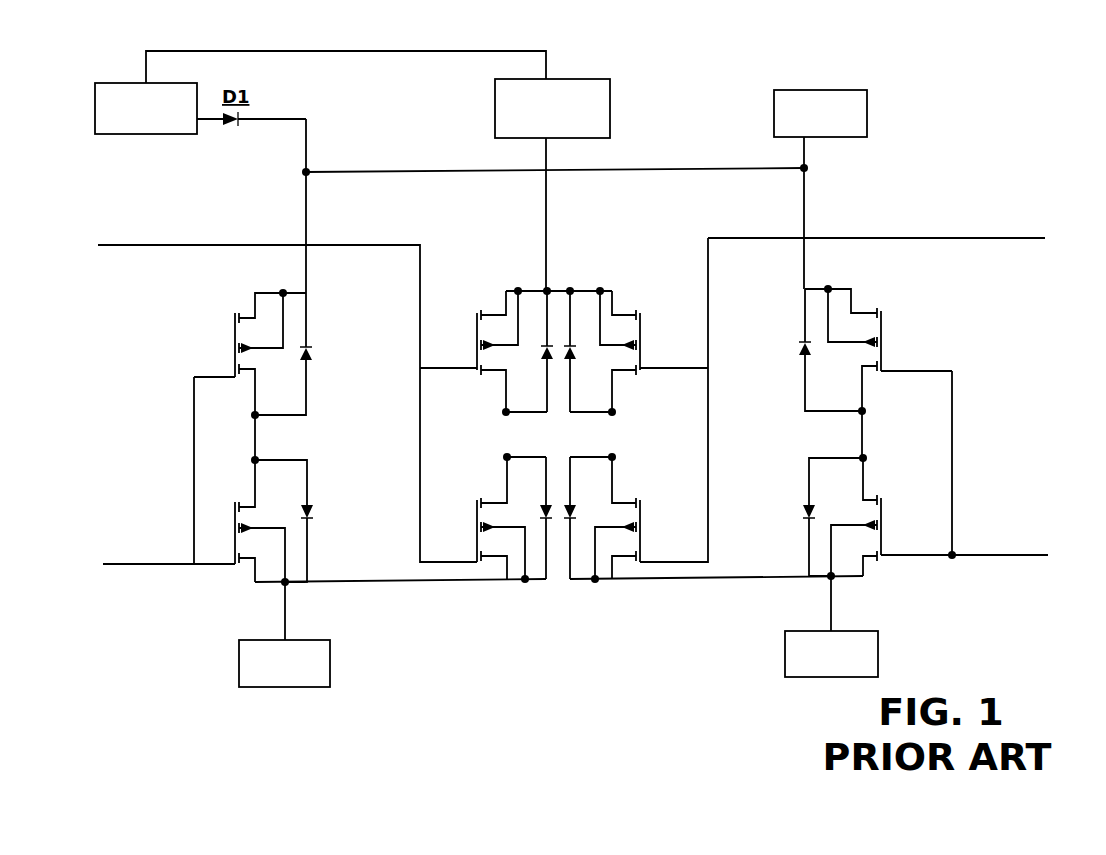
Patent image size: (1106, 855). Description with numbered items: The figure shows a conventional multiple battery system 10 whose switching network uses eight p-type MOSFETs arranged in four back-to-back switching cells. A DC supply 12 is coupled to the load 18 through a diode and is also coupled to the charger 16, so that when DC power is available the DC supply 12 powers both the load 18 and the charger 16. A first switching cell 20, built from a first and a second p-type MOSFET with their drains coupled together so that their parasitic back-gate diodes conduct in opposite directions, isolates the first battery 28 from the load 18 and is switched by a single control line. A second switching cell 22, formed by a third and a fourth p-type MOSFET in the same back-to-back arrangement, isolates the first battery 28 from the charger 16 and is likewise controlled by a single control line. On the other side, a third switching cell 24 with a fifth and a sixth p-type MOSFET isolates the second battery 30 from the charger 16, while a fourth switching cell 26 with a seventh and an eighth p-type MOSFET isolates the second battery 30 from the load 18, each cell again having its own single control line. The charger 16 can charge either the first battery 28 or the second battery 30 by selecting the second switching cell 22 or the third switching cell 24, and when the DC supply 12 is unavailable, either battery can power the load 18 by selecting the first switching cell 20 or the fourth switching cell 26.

The multiple battery system 10 is at (923, 53).
The DC supply 12 is at (113, 83).
The charger 16 is at (571, 79).
The load 18 is at (817, 90).
The first switching cell 20 is at (200, 335).
The second switching cell 22 is at (492, 262).
The third switching cell 24 is at (595, 260).
The fourth switching cell 26 is at (903, 300).
The first battery 28 is at (258, 640).
The second battery 30 is at (800, 631).